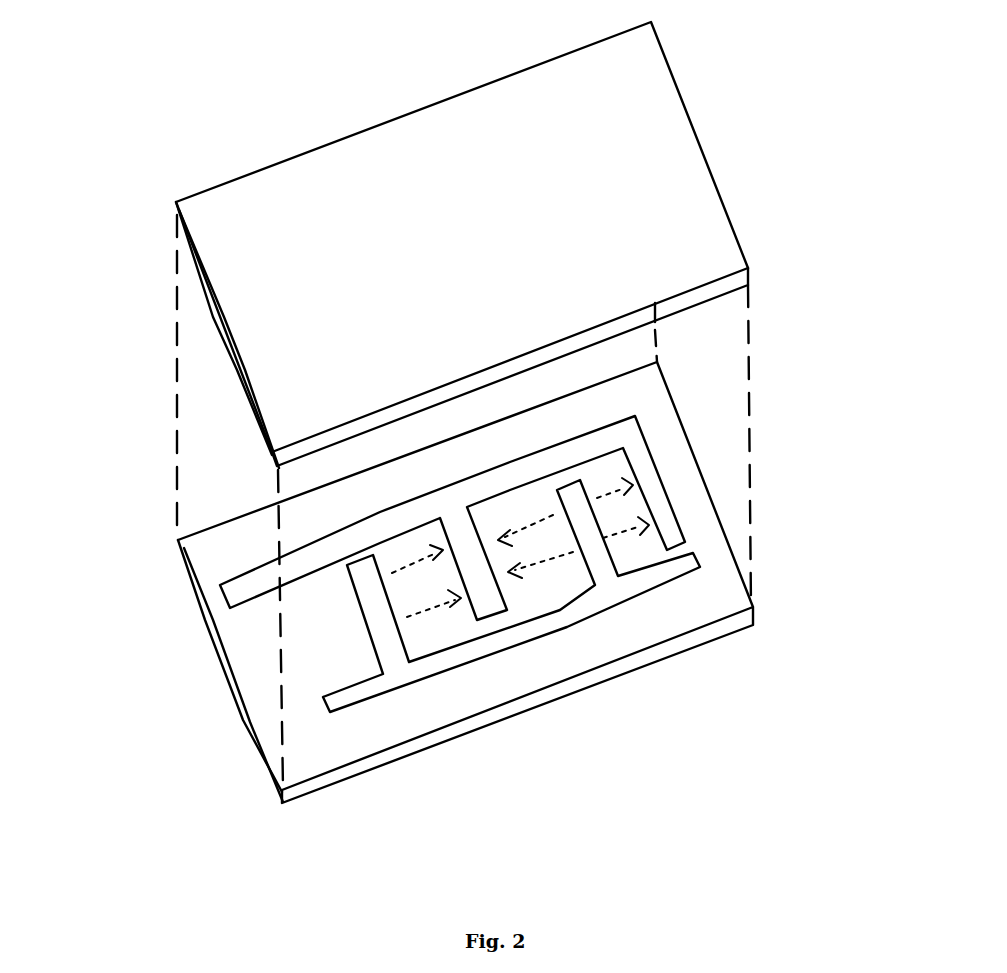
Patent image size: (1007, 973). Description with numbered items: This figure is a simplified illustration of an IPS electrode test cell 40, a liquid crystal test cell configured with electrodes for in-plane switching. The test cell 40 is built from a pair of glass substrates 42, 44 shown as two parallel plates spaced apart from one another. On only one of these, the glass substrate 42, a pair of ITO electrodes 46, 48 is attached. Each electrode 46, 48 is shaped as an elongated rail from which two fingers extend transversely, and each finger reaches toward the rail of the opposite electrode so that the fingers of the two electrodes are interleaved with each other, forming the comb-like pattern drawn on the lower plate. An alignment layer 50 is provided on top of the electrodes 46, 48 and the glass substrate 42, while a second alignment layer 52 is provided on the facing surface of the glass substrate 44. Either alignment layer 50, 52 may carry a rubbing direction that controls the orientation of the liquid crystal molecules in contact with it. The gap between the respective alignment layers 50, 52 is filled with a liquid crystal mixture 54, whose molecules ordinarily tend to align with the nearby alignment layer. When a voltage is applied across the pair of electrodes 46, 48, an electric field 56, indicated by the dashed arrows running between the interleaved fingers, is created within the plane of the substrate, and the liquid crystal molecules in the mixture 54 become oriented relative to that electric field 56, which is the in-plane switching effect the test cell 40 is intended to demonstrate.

The IPS electrode test cell 40 is at (148, 758).
The glass substrate 42 is at (347, 773).
The glass substrate 44 is at (231, 157).
The ITO electrode 46 is at (477, 645).
The ITO electrode 48 is at (367, 528).
The alignment layer 50 is at (254, 641).
The second alignment layer 52 is at (264, 441).
The liquid crystal mixture 54 is at (218, 488).
The electric field 56 is at (546, 566).